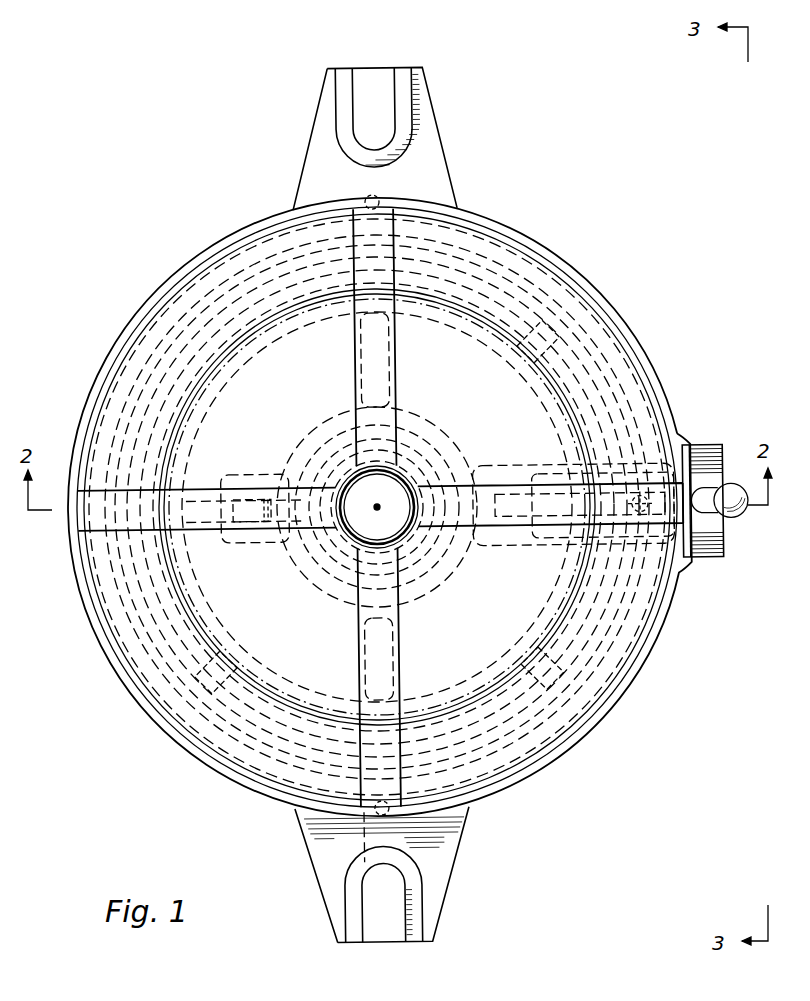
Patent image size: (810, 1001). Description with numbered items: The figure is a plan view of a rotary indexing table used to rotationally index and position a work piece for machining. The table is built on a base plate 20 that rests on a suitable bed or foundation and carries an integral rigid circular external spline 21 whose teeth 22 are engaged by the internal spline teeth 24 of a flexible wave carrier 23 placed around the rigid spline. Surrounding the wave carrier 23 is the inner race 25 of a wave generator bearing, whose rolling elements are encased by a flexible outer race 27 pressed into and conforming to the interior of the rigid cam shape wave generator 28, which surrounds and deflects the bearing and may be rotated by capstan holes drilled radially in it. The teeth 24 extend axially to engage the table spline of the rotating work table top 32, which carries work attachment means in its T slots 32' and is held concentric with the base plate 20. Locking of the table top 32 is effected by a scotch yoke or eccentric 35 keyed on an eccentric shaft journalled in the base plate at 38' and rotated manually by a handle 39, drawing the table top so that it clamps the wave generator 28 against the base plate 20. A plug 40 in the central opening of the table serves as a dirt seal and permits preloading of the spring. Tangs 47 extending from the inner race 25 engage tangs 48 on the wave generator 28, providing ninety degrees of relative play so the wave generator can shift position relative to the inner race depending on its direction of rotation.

The base plate 20 is at (300, 182).
The rigid circular external spline 21 is at (503, 348).
The spline teeth 22 is at (489, 325).
The flexible internal spline or wave carrier 23 is at (581, 400).
The internal spline teeth 24 is at (559, 367).
The inner race of wave generator bearing 25 is at (462, 275).
The outer race 27 is at (486, 270).
The cam shape wave generator 28 is at (538, 272).
The work table top 32 is at (306, 508).
The T slots 32' is at (315, 507).
The scotch yoke or eccentric 35 is at (327, 530).
The eccentric shaft journal 38' is at (573, 494).
The handle 39 is at (742, 513).
The plug 40 is at (352, 477).
The tangs 47 is at (540, 672).
The tangs 48 is at (215, 668).